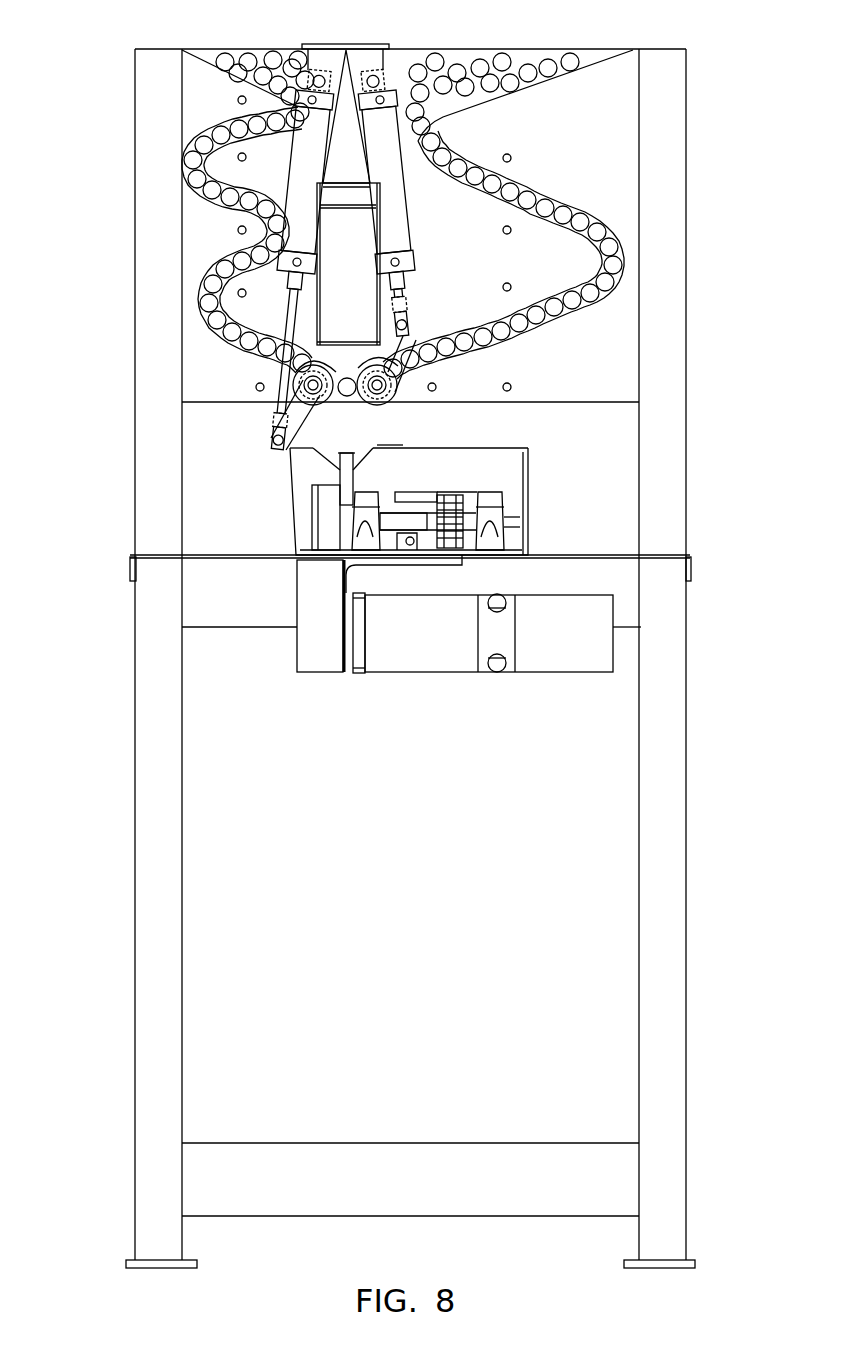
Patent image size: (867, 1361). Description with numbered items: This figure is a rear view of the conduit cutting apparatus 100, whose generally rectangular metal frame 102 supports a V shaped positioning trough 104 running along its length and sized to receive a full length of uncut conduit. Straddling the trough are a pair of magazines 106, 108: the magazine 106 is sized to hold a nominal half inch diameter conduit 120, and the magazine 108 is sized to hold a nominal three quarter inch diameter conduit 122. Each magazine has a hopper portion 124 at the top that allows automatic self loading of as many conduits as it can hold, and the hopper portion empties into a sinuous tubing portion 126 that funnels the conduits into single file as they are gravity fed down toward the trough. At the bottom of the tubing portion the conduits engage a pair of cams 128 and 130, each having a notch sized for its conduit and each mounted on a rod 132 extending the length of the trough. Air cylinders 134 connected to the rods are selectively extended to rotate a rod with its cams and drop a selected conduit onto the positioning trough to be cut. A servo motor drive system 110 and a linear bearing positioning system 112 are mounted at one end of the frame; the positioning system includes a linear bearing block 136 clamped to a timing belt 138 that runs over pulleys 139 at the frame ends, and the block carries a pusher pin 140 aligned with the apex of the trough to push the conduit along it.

The conduit cutting apparatus 100 is at (106, 348).
The frame 102 is at (133, 712).
The positioning trough 104 is at (288, 477).
The magazine 106 is at (192, 88).
The magazine 108 is at (610, 108).
The servo motor drive system 110 is at (410, 650).
The linear bearing positioning system 112 is at (530, 460).
The conduit 120 is at (188, 137).
The conduit 122 is at (512, 183).
The hopper portion 124 is at (208, 50).
The sinuous tubing portion 126 is at (221, 197).
The cam 128 is at (300, 362).
The cam 130 is at (360, 367).
The rod 132 is at (317, 410).
The air cylinder 134 is at (388, 222).
The linear bearing block 136 is at (408, 492).
The timing belt 138 is at (450, 502).
The pulley 139 is at (467, 548).
The pusher pin 140 is at (343, 477).